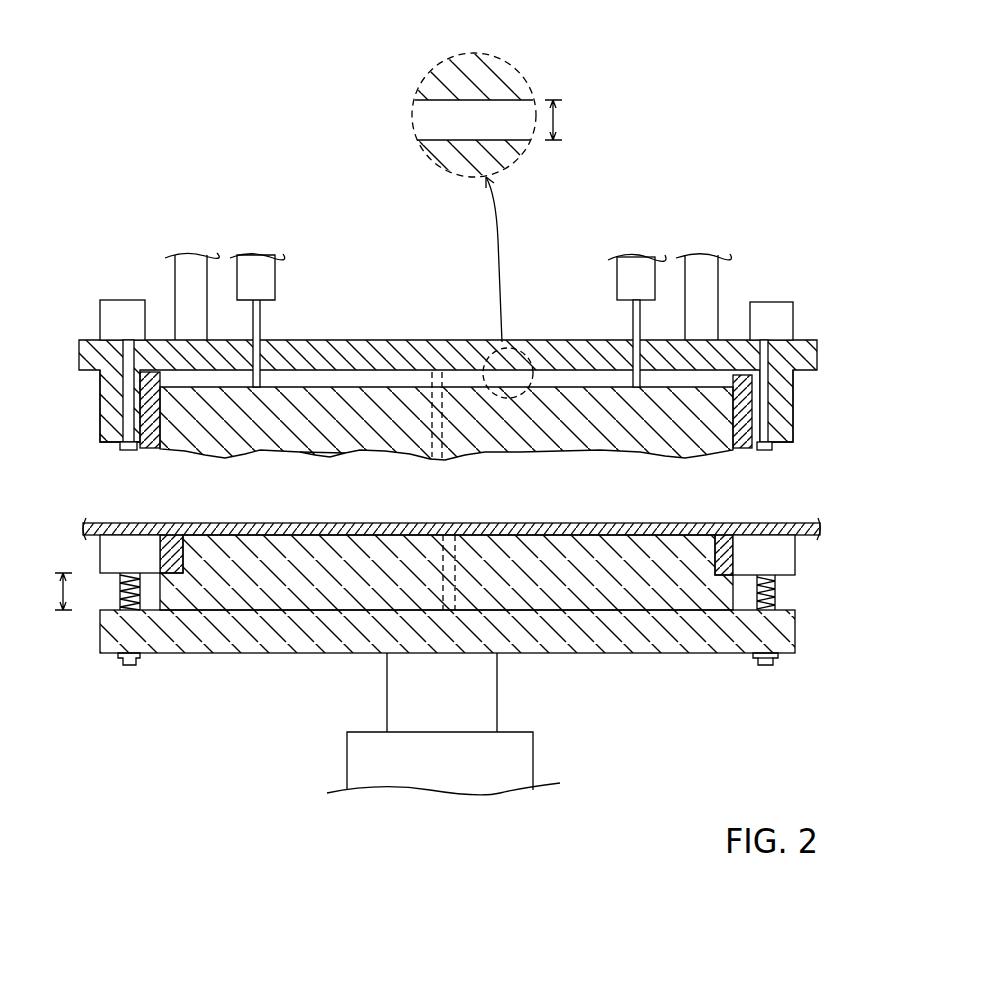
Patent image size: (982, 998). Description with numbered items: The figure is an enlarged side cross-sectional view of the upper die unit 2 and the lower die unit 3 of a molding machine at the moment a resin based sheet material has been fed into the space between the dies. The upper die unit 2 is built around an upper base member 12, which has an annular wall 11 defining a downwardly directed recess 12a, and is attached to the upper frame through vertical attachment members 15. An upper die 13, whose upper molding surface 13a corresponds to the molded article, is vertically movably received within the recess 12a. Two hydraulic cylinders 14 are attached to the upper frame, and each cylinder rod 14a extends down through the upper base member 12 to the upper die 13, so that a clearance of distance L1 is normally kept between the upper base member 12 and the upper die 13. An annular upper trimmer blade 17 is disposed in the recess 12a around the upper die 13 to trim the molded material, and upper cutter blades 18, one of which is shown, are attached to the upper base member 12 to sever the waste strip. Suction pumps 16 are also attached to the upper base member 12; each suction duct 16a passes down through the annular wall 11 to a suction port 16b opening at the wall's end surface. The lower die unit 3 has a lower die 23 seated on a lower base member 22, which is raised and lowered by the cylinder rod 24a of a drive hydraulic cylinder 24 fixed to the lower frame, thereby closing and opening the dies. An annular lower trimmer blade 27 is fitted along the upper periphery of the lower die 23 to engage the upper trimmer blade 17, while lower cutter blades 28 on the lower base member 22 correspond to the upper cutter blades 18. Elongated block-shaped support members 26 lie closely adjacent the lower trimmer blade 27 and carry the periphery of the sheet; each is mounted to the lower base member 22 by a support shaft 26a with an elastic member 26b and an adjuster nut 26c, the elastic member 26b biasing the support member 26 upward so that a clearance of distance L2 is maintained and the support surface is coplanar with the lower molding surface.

The upper die unit 2 is at (858, 417).
The lower die unit 3 is at (847, 582).
The annular wall 11 is at (103, 430).
The upper base member 12 is at (490, 82).
The recess 12a is at (308, 377).
The upper die 13 is at (183, 398).
The upper molding surface 13a is at (668, 460).
The hydraulic cylinder 14 is at (630, 270).
The cylinder rod 14a is at (635, 327).
The vertical attachment member 15 is at (700, 267).
The suction pump 16 is at (780, 315).
The suction duct 16a is at (764, 425).
The suction port 16b is at (772, 447).
The upper trimmer blade 17 is at (745, 397).
The upper cutter blade 18 is at (432, 395).
The lower base member 22 is at (653, 645).
The lower die 23 is at (493, 603).
The drive hydraulic cylinder 24 is at (455, 767).
The cylinder rod 24a is at (400, 672).
The support member 26 is at (768, 542).
The support shaft 26a is at (763, 667).
The elastic member 26b is at (140, 595).
The adjuster nut 26c is at (777, 657).
The lower trimmer blade 27 is at (727, 547).
The lower cutter blade 28 is at (443, 573).
The clearance distance L1 is at (570, 120).
The clearance distance L2 is at (80, 591).